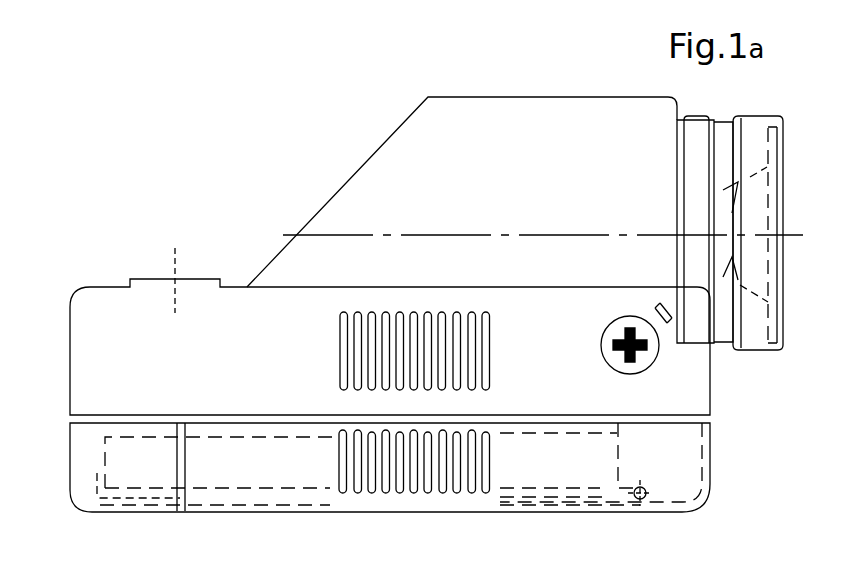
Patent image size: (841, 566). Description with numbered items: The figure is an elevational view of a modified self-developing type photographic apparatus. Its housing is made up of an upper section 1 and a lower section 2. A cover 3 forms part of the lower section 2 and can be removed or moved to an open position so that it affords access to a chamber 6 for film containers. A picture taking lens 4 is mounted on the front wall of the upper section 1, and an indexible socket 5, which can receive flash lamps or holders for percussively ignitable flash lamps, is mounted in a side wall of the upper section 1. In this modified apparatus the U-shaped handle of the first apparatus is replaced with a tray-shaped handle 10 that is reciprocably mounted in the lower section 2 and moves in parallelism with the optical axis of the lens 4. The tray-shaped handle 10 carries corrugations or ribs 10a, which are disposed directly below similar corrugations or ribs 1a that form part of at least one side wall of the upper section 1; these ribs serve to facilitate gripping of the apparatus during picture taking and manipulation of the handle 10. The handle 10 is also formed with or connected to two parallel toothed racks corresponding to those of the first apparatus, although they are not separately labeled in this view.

The upper section 1 is at (288, 263).
The corrugations or ribs 1a is at (487, 328).
The lower section 2 is at (82, 465).
The cover 3 is at (113, 498).
The picture taking lens 4 is at (755, 133).
The indexible socket 5 is at (648, 352).
The chamber 6 is at (152, 465).
The tray-shaped handle 10 is at (683, 472).
The corrugations or ribs 10a is at (343, 462).